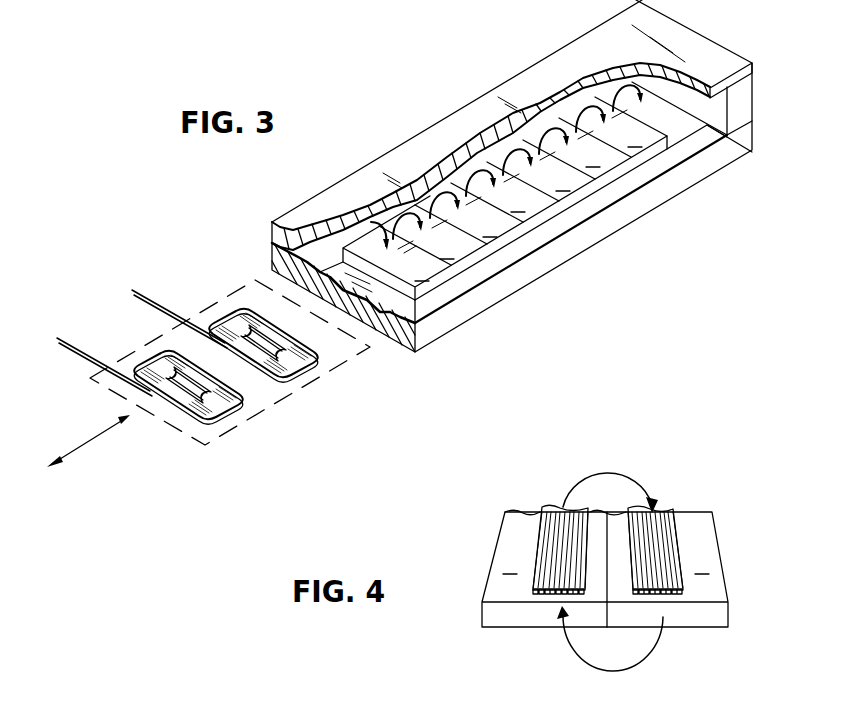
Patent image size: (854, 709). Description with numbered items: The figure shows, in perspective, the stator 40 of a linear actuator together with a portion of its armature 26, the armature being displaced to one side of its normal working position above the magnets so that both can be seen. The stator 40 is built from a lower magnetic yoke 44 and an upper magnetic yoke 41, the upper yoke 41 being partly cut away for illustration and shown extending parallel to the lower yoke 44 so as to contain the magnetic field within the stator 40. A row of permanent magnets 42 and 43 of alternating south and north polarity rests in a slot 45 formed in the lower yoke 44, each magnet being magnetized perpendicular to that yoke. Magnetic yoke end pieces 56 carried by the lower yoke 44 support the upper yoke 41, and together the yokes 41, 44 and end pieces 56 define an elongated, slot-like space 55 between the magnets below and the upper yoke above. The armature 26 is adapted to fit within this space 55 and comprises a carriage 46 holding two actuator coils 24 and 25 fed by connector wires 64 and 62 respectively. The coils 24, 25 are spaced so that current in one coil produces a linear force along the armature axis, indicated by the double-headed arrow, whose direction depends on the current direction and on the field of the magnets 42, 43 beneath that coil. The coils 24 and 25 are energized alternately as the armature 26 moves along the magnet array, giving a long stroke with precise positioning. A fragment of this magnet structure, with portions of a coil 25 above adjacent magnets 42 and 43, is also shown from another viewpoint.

In FIG. 3, the stator 40 is at (464, 88).
In FIG. 3, the upper magnetic yoke 41 is at (713, 50).
In FIG. 3, the permanent magnet (S pole) 42 is at (686, 160).
In FIG. 4, the permanent magnet (S pole) 42 is at (513, 623).
In FIG. 3, the permanent magnet (N pole) 43 is at (640, 165).
In FIG. 4, the permanent magnet (N pole) 43 is at (700, 623).
In FIG. 3, the lower magnetic yoke 44 is at (750, 144).
In FIG. 3, the slot 45 is at (383, 318).
In FIG. 3, the carriage 46 is at (226, 300).
In FIG. 3, the slot-like space 55 is at (705, 126).
In FIG. 3, the magnetic yoke end piece 56 is at (750, 104).
In FIG. 3, the actuator coil 24 is at (305, 368).
In FIG. 3, the actuator coil 25 is at (232, 404).
In FIG. 4, the actuator coil 25 is at (553, 530).
In FIG. 3, the armature 26 is at (154, 449).
In FIG. 4, the armature 26 is at (520, 492).
In FIG. 3, the connector wire 62 is at (80, 352).
In FIG. 3, the connector wire 64 is at (158, 300).